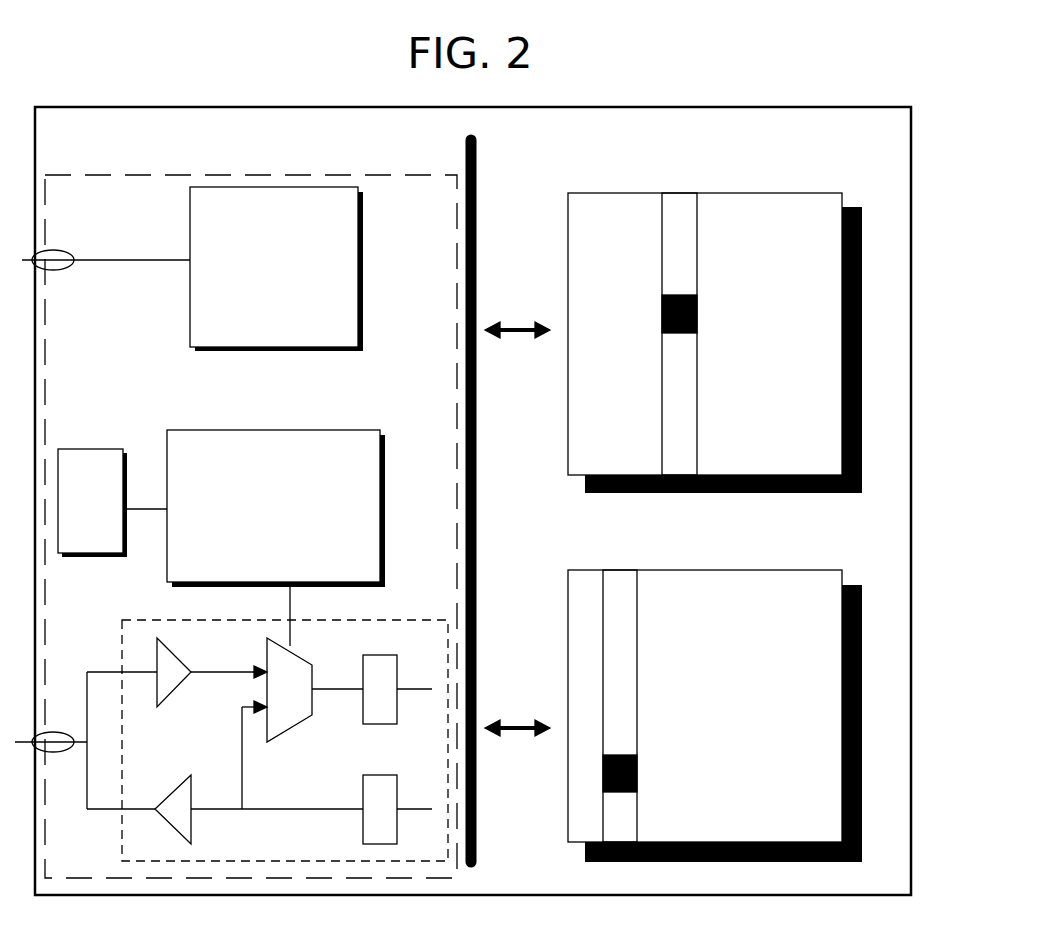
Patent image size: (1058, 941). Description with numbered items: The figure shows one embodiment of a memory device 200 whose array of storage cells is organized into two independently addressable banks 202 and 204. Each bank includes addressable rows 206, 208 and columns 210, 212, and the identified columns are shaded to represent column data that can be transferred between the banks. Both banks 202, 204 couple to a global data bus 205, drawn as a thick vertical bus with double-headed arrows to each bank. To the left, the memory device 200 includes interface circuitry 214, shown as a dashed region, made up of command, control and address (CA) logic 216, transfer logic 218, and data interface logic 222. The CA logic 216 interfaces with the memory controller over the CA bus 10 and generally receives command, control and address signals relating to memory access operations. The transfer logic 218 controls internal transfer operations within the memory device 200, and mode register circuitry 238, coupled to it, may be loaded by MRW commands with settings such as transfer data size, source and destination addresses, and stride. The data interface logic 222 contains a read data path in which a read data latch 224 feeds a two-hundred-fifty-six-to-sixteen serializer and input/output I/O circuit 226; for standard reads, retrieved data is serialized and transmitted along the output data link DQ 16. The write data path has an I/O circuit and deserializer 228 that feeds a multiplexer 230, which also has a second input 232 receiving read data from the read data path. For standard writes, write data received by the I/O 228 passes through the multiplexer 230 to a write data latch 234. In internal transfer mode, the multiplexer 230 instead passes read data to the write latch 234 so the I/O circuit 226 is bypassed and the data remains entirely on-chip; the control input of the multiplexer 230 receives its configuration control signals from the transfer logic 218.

The memory device 200 is at (836, 74).
The interface circuitry 214 is at (128, 167).
The command, control and address (CA) logic 216 is at (248, 318).
The CA bus 10 is at (106, 248).
The mode register circuitry 238 is at (69, 529).
The transfer logic 218 is at (247, 557).
The data interface logic 222 is at (120, 628).
The DQ bus 16 is at (86, 740).
The I/O circuit and deserializer 228 is at (177, 657).
The second input of the multiplexer 232 is at (242, 707).
The multiplexer 230 is at (293, 728).
The write data latch 234 is at (362, 659).
The read data latch 224 is at (362, 827).
The serializer and input/output I/O circuit 226 is at (192, 793).
The global data bus 205 is at (478, 183).
The bank 204 is at (795, 225).
The row 208 is at (680, 192).
The column 212 is at (662, 318).
The bank 202 is at (795, 602).
The row 206 is at (623, 570).
The column 210 is at (637, 773).